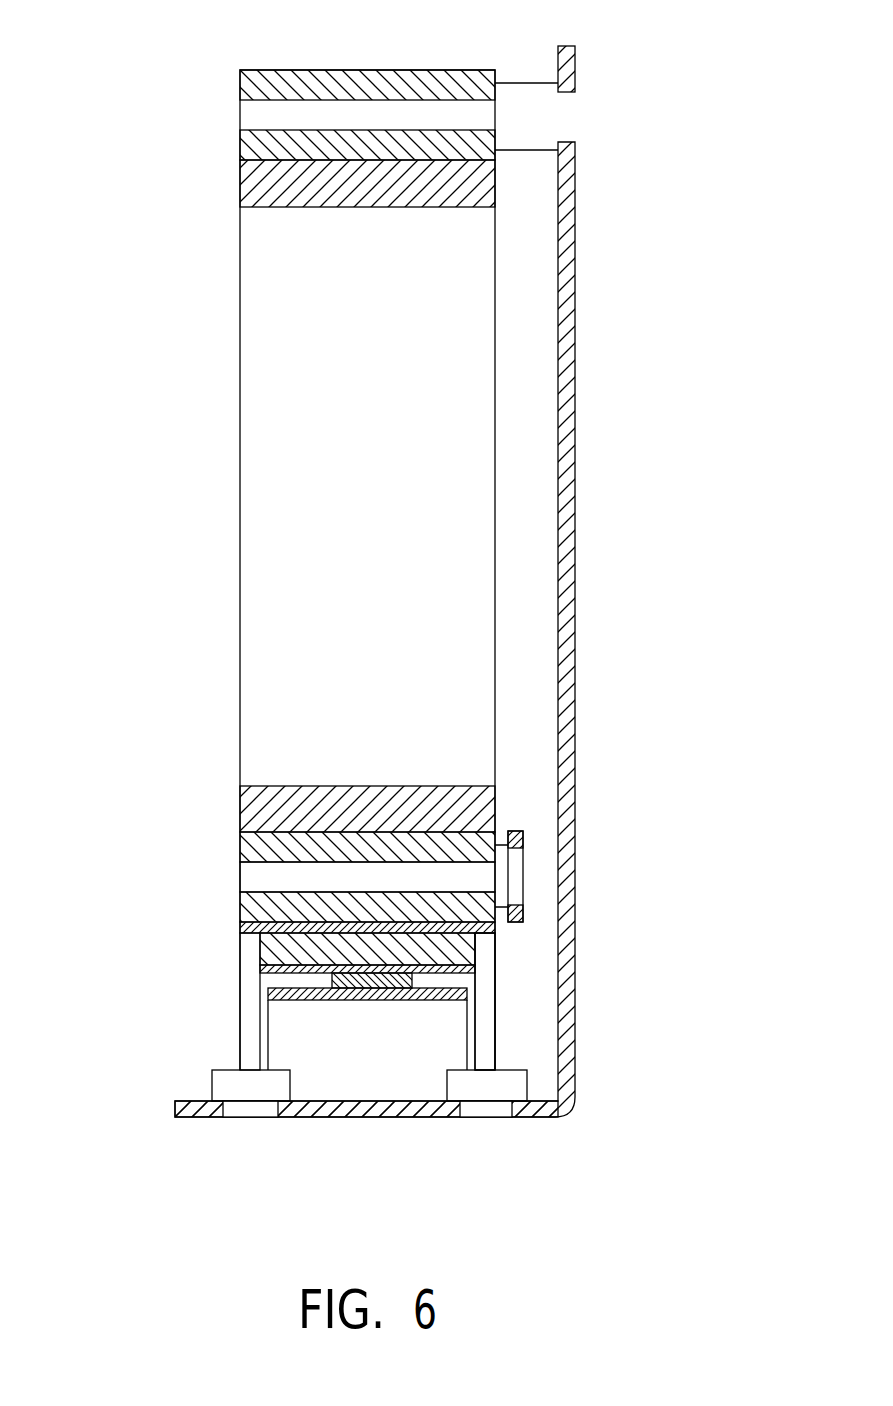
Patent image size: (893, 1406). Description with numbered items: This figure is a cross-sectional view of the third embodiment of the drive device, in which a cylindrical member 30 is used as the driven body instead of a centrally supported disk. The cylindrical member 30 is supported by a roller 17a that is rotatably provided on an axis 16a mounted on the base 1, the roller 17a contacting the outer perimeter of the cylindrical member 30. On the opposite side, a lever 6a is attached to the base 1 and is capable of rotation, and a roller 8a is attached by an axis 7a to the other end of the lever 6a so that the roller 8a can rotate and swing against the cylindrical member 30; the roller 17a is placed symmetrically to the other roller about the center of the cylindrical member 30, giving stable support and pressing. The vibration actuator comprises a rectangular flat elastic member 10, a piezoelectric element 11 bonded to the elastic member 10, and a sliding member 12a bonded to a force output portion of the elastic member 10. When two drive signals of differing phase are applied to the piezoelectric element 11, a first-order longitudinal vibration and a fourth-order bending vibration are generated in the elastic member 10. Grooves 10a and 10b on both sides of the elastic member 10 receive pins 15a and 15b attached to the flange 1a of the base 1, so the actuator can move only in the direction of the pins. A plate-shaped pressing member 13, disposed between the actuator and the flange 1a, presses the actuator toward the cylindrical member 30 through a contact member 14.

The base 1 is at (567, 203).
The flange 1a is at (364, 1117).
The lever 6a is at (525, 843).
The axis 7a is at (455, 880).
The roller 8a is at (268, 847).
The elastic member 10 is at (285, 947).
The groove 10a is at (247, 938).
The groove 10b is at (487, 940).
The piezoelectric element 11 is at (467, 962).
The sliding member 12a is at (340, 925).
The pressing member 13 is at (285, 1040).
The contact member 14 is at (333, 982).
The pin 15a is at (249, 1085).
The pin 15b is at (487, 1085).
The axis 16a is at (522, 120).
The roller 17a is at (265, 85).
The cylindrical member 30 is at (258, 395).